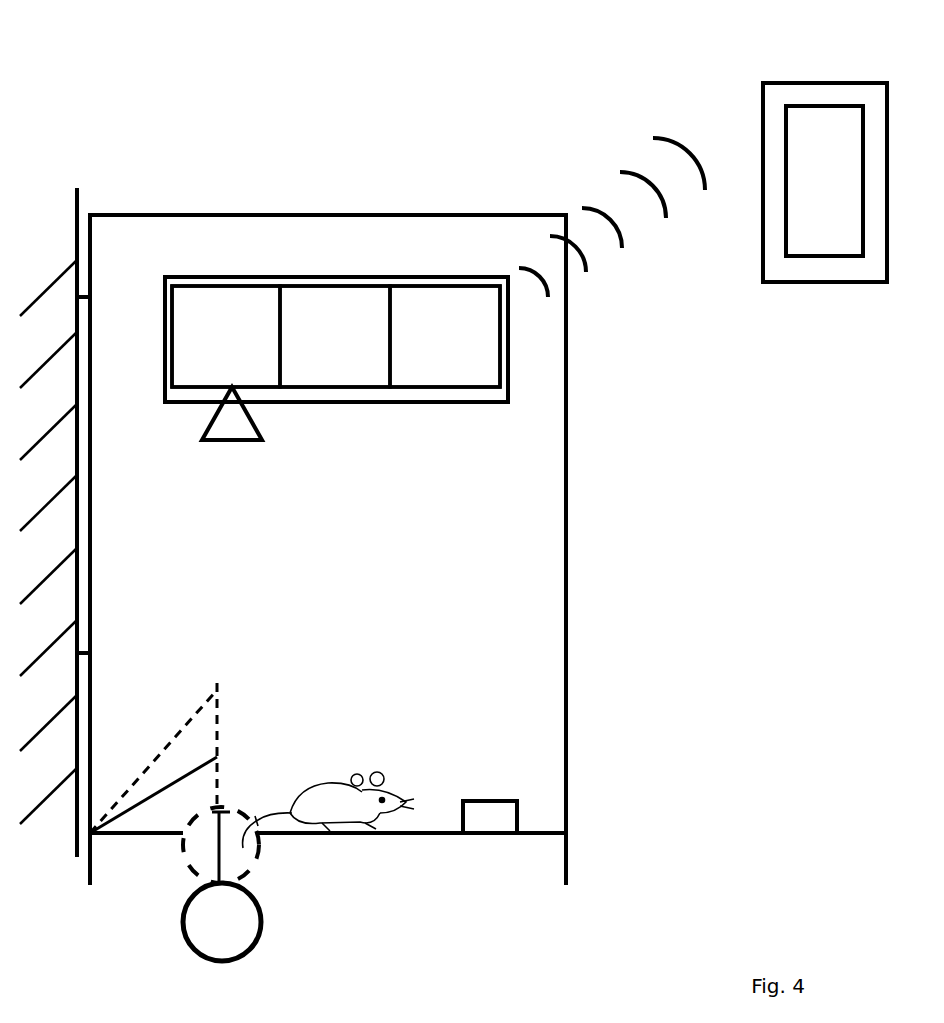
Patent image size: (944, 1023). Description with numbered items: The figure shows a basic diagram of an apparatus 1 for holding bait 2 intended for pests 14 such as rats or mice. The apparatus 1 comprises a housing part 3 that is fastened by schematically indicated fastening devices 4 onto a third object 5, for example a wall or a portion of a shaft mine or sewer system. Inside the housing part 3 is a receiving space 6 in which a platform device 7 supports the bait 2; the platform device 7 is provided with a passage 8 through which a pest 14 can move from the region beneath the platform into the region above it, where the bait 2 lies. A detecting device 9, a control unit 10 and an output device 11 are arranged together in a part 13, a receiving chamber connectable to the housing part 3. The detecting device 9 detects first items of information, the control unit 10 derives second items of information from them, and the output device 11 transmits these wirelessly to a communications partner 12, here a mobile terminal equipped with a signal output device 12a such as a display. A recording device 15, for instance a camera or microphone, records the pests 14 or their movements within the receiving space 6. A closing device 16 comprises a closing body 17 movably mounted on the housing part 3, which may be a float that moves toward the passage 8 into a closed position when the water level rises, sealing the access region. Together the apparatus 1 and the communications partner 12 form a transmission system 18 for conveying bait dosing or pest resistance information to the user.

The apparatus 1 is at (288, 110).
The bait 2 is at (483, 822).
The housing part 3 is at (567, 718).
The fastening devices 4 is at (83, 295).
The third object 5 is at (48, 522).
The receiving space 6 is at (561, 511).
The platform device 7 is at (538, 837).
The passage 8 is at (160, 807).
The detecting device 9 is at (201, 307).
The control unit 10 is at (302, 305).
The output device 11 is at (419, 307).
The communications partner 12 is at (762, 122).
The signal output device 12a is at (837, 130).
The part 13 is at (510, 372).
The pest 14 is at (333, 808).
The recording device 15 is at (240, 430).
The closing device 16 is at (248, 884).
The closing body 17 is at (188, 945).
The transmission system 18 is at (771, 576).